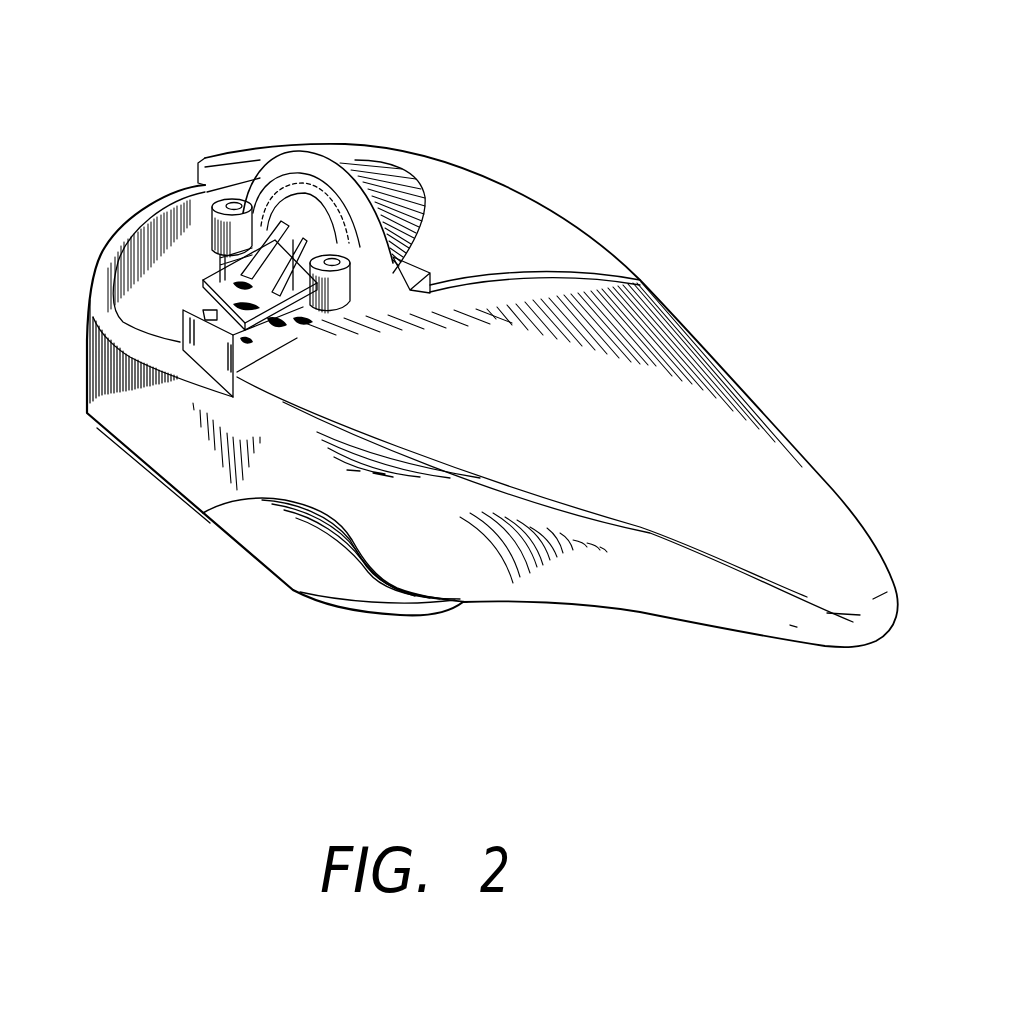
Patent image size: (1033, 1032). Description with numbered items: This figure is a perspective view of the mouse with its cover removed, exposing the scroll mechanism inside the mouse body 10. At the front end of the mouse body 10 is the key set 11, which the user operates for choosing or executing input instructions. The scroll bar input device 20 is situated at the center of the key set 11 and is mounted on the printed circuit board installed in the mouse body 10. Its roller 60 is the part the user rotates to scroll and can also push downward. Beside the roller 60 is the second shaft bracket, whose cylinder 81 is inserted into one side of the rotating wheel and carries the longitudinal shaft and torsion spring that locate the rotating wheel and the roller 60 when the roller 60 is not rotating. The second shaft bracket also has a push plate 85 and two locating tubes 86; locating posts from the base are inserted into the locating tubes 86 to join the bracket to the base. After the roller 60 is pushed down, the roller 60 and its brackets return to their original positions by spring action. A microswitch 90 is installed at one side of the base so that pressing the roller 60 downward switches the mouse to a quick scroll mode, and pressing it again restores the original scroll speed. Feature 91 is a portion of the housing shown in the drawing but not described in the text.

The mouse body 10 is at (773, 483).
The key set 11 is at (209, 146).
The scroll bar input device 20 is at (261, 152).
The roller 60 is at (325, 177).
The cylinder 81 is at (294, 222).
The push plate 85 is at (203, 287).
The locating tubes 86 is at (224, 204).
The microswitch 90 is at (183, 310).
The lower housing bulge 91 is at (288, 560).